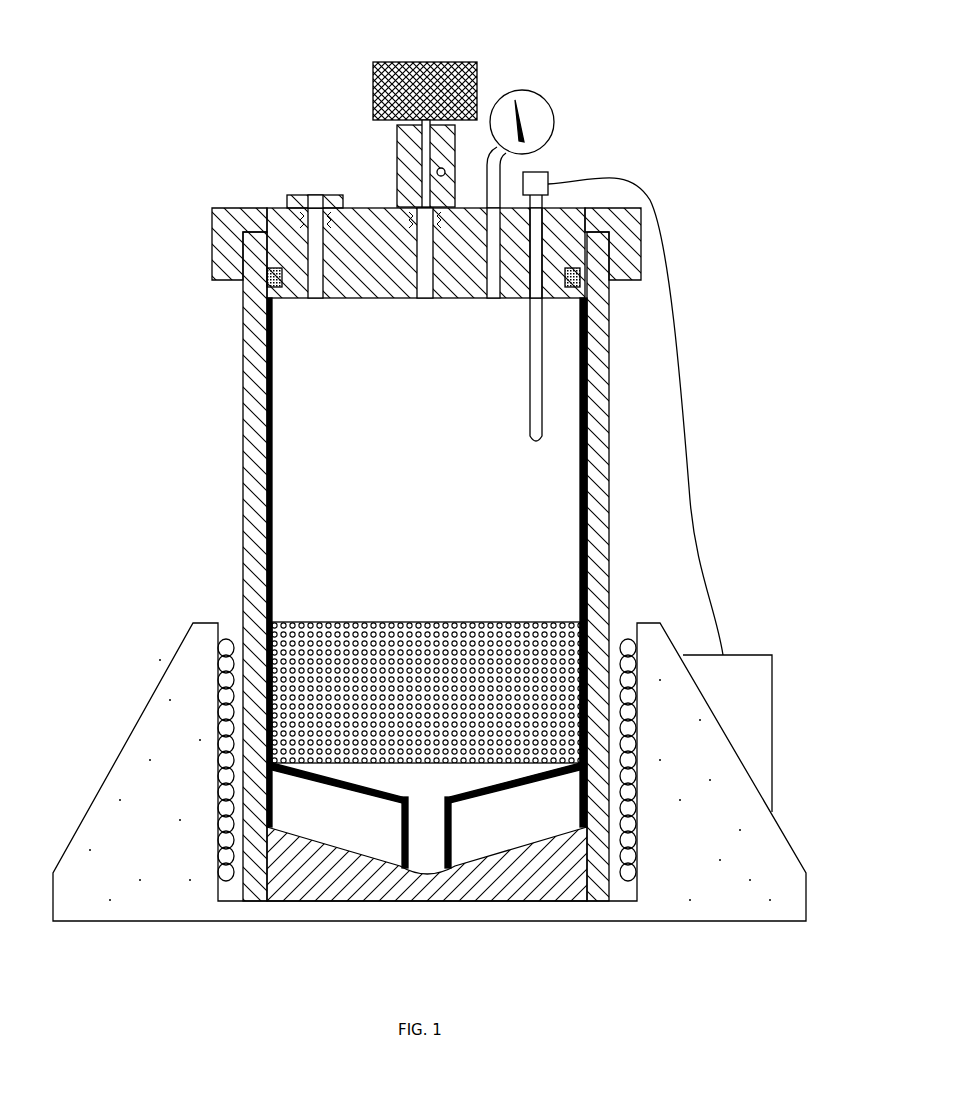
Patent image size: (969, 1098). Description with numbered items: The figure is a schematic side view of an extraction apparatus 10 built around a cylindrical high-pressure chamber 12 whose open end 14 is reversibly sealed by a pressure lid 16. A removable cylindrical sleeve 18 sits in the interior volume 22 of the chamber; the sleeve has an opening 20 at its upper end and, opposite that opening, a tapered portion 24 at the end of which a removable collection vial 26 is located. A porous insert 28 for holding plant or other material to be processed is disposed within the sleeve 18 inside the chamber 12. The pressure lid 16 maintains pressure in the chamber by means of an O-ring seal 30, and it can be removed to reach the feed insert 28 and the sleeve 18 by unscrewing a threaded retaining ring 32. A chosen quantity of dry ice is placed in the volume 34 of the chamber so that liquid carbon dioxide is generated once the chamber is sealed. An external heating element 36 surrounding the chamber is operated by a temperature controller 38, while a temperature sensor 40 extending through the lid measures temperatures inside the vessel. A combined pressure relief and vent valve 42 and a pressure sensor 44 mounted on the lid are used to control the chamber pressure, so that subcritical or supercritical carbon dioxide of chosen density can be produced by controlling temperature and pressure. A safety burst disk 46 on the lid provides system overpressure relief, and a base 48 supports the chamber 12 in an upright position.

The extraction apparatus 10 is at (529, 53).
The high-pressure chamber 12 is at (243, 420).
The open end 14 is at (520, 300).
The pressure lid 16 is at (572, 203).
The removable cylindrical sleeve 18 is at (267, 500).
The opening 20 is at (278, 305).
The interior volume 22 is at (337, 831).
The tapered portion 24 is at (383, 788).
The removable collection vial 26 is at (455, 855).
The porous insert 28 is at (272, 620).
The O-ring seal 30 is at (588, 285).
The threaded retaining ring 32 is at (212, 240).
The volume 34 is at (447, 505).
The external heating element 36 is at (633, 640).
The temperature controller 38 is at (752, 652).
The temperature sensor 40 is at (552, 167).
The combined pressure relief and vent valve 42 is at (397, 147).
The pressure sensor 44 is at (550, 100).
The safety burst disk 46 is at (288, 197).
The base 48 is at (103, 772).